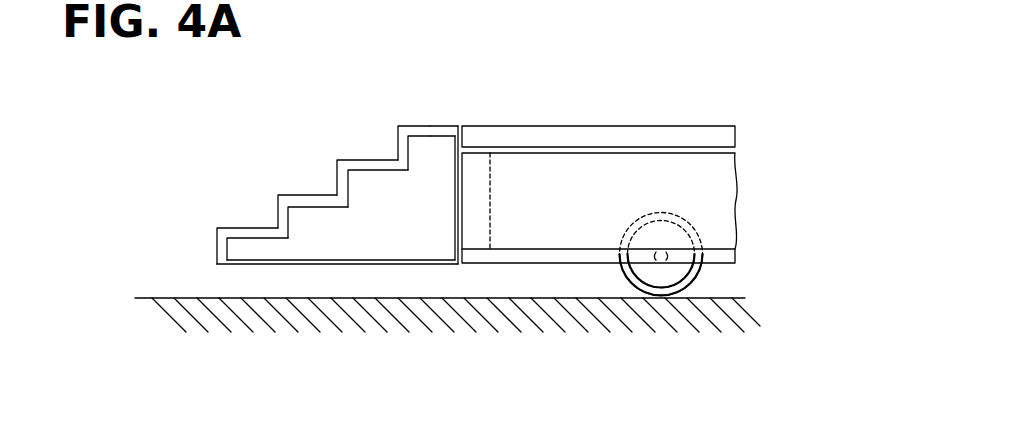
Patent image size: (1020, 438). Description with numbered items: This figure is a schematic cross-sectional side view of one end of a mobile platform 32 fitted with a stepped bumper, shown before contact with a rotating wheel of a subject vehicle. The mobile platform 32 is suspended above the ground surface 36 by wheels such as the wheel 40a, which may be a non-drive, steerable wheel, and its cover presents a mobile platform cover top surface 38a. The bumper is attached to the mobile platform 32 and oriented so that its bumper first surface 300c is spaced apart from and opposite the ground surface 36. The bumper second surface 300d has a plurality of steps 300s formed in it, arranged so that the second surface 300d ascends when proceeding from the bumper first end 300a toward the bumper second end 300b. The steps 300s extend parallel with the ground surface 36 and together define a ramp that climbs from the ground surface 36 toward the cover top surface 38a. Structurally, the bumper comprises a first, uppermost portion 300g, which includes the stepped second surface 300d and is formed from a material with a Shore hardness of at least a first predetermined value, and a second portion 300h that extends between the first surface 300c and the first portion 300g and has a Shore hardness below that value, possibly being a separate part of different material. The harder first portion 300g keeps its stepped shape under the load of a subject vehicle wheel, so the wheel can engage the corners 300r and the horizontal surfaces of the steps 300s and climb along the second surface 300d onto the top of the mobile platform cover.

The mobile platform 32 is at (685, 187).
The ground surface 36 is at (453, 299).
The mobile platform cover top surface 38a is at (624, 126).
The wheel 40a is at (687, 290).
The bumper first end 300a is at (217, 244).
The bumper second end 300b is at (458, 208).
The bumper first surface 300c is at (349, 265).
The bumper second surface 300d is at (410, 127).
The first portion 300g is at (430, 127).
The second portion 300h is at (378, 207).
The corners 300r is at (278, 195).
The steps 300s is at (362, 160).